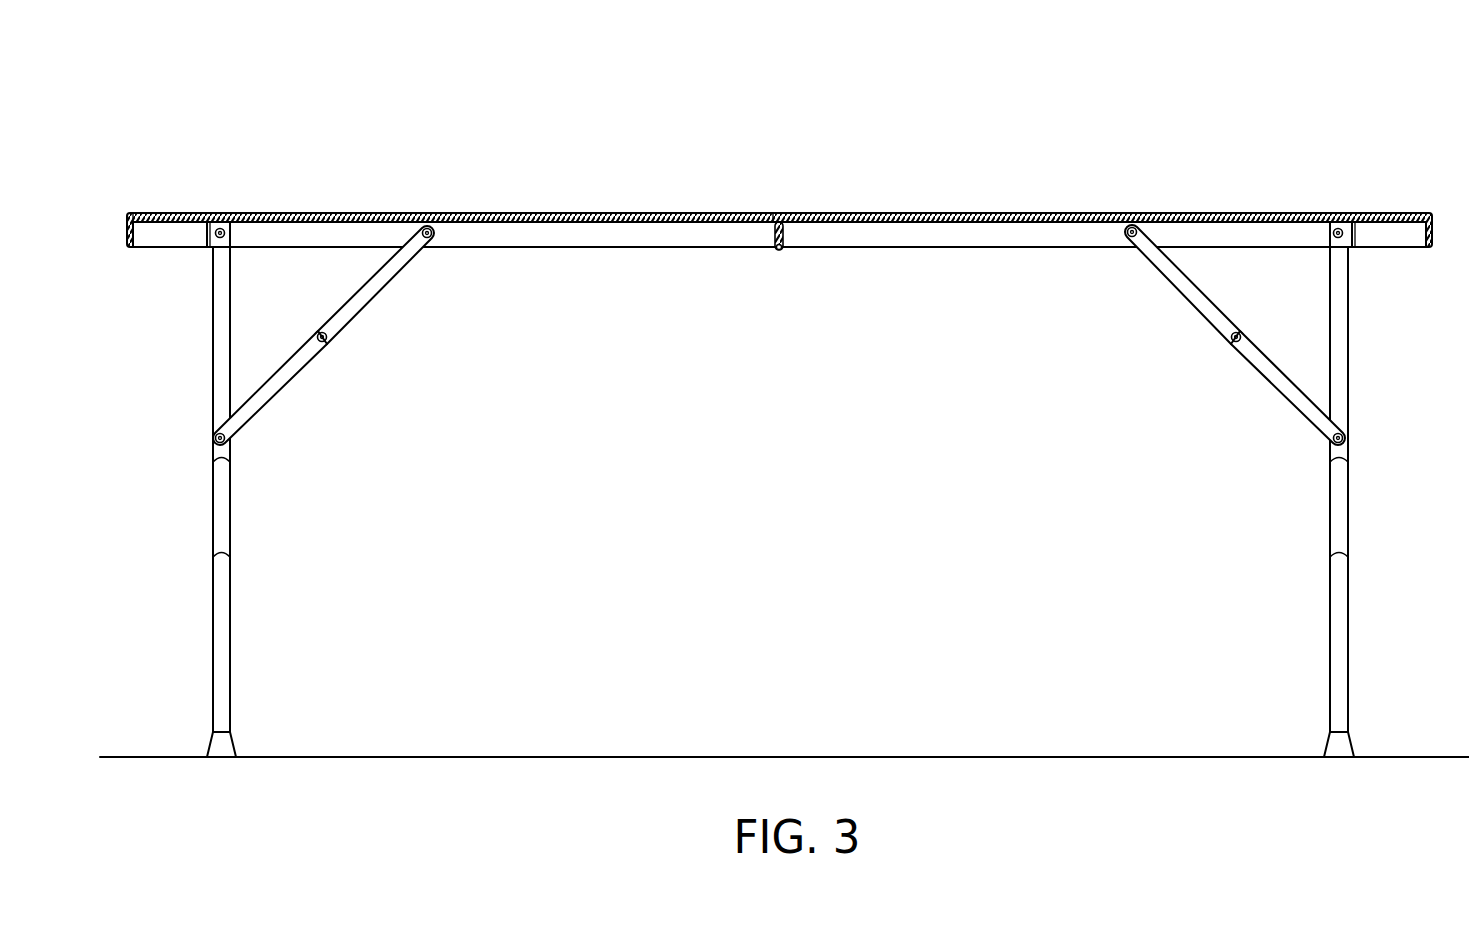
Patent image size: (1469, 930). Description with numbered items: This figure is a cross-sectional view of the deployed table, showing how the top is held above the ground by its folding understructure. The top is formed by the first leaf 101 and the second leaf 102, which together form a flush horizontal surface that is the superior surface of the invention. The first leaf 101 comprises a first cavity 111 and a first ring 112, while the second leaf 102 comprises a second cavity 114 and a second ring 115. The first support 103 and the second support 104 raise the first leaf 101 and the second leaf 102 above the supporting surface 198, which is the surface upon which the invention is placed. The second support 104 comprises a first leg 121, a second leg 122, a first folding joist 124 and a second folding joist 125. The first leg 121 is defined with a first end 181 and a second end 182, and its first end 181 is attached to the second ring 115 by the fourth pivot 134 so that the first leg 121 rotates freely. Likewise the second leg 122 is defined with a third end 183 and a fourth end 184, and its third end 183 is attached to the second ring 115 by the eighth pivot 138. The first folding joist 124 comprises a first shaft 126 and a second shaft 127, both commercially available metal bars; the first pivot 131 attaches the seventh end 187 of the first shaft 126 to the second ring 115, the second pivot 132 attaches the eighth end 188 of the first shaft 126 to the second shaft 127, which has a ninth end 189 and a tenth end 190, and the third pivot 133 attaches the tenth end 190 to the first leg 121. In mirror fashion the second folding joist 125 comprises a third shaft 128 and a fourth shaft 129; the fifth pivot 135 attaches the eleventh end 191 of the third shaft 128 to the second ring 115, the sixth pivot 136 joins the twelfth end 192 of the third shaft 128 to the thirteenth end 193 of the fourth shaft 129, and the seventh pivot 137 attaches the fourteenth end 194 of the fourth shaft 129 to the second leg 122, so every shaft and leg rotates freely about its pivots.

The first leaf 101 is at (987, 213).
The second leaf 102 is at (515, 213).
The first support 103 is at (1230, 438).
The second support 104 is at (327, 434).
The first cavity 111 is at (892, 233).
The first ring 112 is at (1357, 237).
The second cavity 114 is at (645, 230).
The second ring 115 is at (190, 237).
The first leg 121 is at (225, 630).
The second leg 122 is at (1340, 630).
The first folding joist 124 is at (302, 375).
The second folding joist 125 is at (1256, 375).
The first shaft 126 is at (403, 268).
The second shaft 127 is at (263, 405).
The third shaft 128 is at (1157, 270).
The fourth shaft 129 is at (1293, 405).
The first pivot 131 is at (426, 230).
The second pivot 132 is at (355, 319).
The third pivot 133 is at (216, 440).
The fourth pivot 134 is at (232, 222).
The fifth pivot 135 is at (1136, 230).
The sixth pivot 136 is at (1223, 326).
The seventh pivot 137 is at (1345, 440).
The eighth pivot 138 is at (1345, 250).
The first end 181 is at (233, 252).
The second end 182 is at (232, 725).
The third end 183 is at (1328, 252).
The fourth end 184 is at (1330, 725).
The seventh end 187 is at (440, 242).
The eighth end 188 is at (330, 331).
The ninth end 189 is at (320, 353).
The tenth end 190 is at (217, 423).
The eleventh end 191 is at (1128, 240).
The twelfth end 192 is at (1235, 331).
The thirteenth end 193 is at (1240, 352).
The fourteenth end 194 is at (1346, 420).
The supporting surface 198 is at (1175, 757).